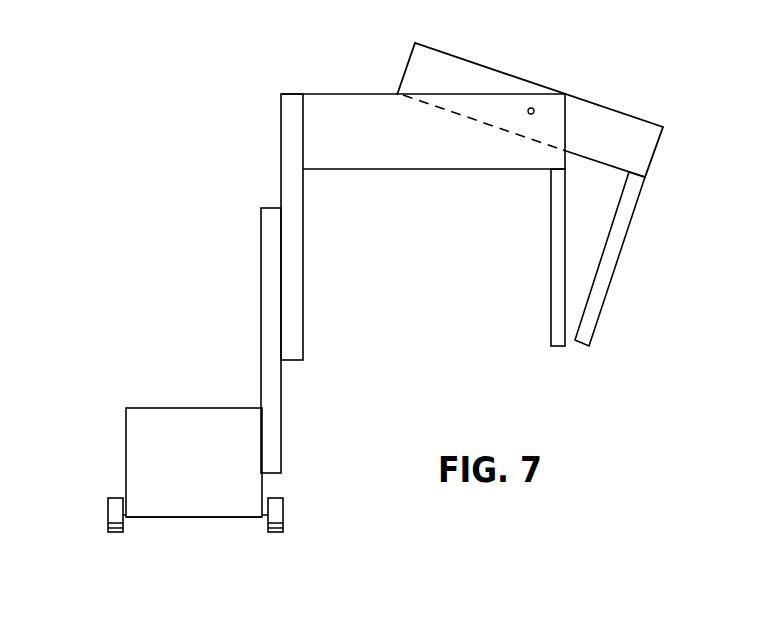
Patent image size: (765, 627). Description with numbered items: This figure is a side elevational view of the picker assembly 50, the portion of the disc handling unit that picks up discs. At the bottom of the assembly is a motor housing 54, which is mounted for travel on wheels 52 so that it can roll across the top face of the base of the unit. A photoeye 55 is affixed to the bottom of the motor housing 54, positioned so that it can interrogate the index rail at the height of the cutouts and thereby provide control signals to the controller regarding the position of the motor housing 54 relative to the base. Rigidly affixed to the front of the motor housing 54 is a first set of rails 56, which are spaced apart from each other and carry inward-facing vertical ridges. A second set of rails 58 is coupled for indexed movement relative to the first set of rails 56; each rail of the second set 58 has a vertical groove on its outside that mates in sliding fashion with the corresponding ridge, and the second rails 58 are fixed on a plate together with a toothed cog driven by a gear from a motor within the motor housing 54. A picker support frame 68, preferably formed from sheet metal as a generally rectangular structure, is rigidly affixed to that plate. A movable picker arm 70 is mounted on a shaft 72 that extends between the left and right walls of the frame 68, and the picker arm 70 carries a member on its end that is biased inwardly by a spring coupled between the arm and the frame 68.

The picker assembly 50 is at (203, 182).
The wheels 52 is at (108, 508).
The motor housing 54 is at (194, 462).
The photoeye 55 is at (183, 518).
The first set of rails 56 is at (281, 413).
The second set of rails 58 is at (303, 258).
The picker support frame 68 is at (351, 94).
The picker arm 70 is at (589, 98).
The shaft 72 is at (536, 109).